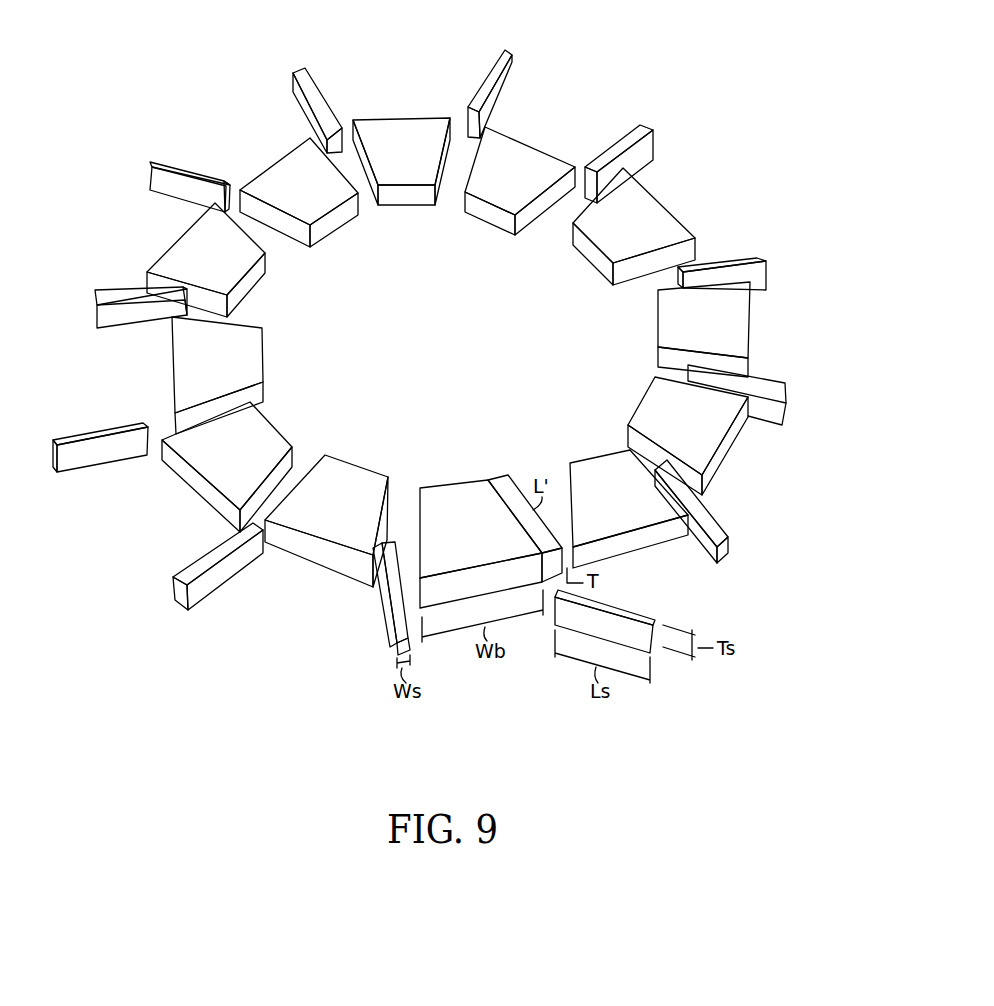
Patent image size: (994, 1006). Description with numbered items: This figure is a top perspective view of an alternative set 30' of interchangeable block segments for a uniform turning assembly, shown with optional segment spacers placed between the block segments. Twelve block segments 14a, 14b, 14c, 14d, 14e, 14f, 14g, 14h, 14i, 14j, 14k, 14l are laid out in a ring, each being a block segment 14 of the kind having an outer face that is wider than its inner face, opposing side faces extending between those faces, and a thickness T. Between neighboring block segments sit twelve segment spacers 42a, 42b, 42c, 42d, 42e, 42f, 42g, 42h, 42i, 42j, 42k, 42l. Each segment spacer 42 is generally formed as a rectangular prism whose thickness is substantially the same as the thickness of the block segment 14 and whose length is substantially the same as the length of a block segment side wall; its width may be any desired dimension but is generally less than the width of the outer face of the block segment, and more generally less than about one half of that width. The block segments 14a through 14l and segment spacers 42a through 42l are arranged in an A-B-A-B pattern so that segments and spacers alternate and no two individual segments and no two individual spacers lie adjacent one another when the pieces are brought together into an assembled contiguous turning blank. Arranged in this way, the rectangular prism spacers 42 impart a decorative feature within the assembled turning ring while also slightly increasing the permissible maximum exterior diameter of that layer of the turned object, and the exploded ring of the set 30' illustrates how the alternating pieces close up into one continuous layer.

The alternative set of interchangeable block segments 30' is at (433, 342).
The block segment 14 is at (435, 461).
The block segment 14a is at (393, 118).
The block segment 14b is at (530, 142).
The block segment 14c is at (658, 198).
The block segment 14d is at (748, 327).
The block segment 14e is at (735, 452).
The block segment 14f is at (642, 547).
The block segment 14g is at (465, 484).
The block segment 14h is at (315, 566).
The block segment 14i is at (188, 488).
The block segment 14j is at (173, 380).
The block segment 14k is at (180, 234).
The block segment 14l is at (282, 162).
The segment spacer 42 is at (480, 83).
The segment spacer 42a is at (507, 55).
The segment spacer 42b is at (650, 120).
The segment spacer 42c is at (733, 258).
The segment spacer 42d is at (763, 377).
The segment spacer 42e is at (713, 511).
The segment spacer 42f is at (648, 616).
The segment spacer 42g is at (387, 627).
The segment spacer 42h is at (233, 582).
The segment spacer 42i is at (100, 470).
The segment spacer 42j is at (130, 330).
The segment spacer 42k is at (148, 168).
The segment spacer 42l is at (318, 90).